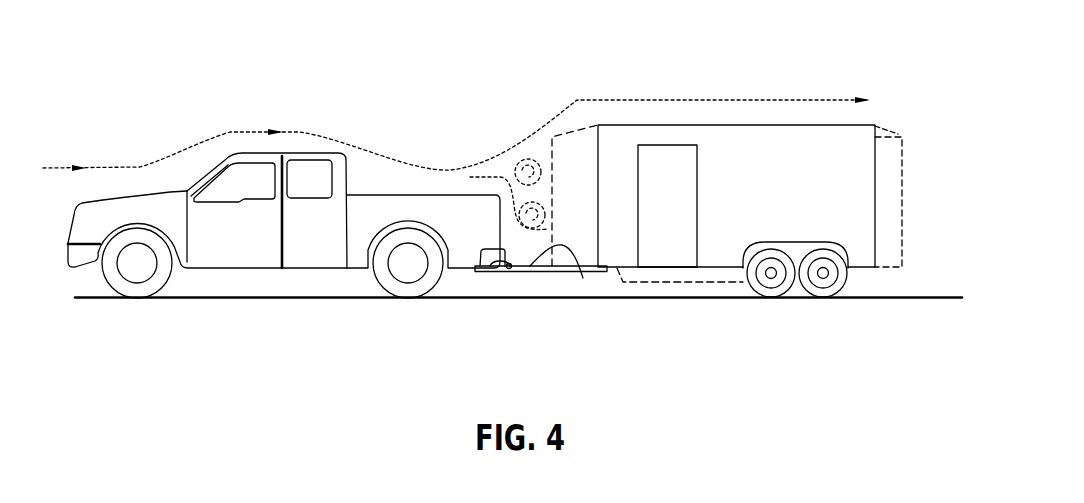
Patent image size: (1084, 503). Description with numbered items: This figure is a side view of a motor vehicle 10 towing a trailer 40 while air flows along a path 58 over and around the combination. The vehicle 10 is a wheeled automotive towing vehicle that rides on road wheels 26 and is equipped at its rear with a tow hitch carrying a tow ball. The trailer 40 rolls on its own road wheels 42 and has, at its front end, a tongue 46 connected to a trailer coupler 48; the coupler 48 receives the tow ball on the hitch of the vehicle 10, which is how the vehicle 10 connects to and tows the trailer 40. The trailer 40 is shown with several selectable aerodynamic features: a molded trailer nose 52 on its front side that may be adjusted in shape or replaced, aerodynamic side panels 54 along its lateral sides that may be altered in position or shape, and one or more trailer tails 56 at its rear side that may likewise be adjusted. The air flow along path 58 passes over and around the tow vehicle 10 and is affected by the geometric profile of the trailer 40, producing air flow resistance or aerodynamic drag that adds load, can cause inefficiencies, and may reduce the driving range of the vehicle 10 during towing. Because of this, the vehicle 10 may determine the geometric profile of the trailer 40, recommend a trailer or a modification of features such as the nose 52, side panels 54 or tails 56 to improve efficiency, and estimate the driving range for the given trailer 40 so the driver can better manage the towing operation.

The motor vehicle 10 is at (206, 138).
The road wheels 26 is at (117, 283).
The trailer 40 is at (767, 103).
The road wheels 42 is at (775, 290).
The tongue 46 is at (583, 278).
The trailer coupler 48 is at (492, 265).
The trailer nose 52 is at (580, 127).
The aerodynamic side panels 54 is at (697, 282).
The trailer tails 56 is at (903, 148).
The air flow path 58 is at (530, 127).